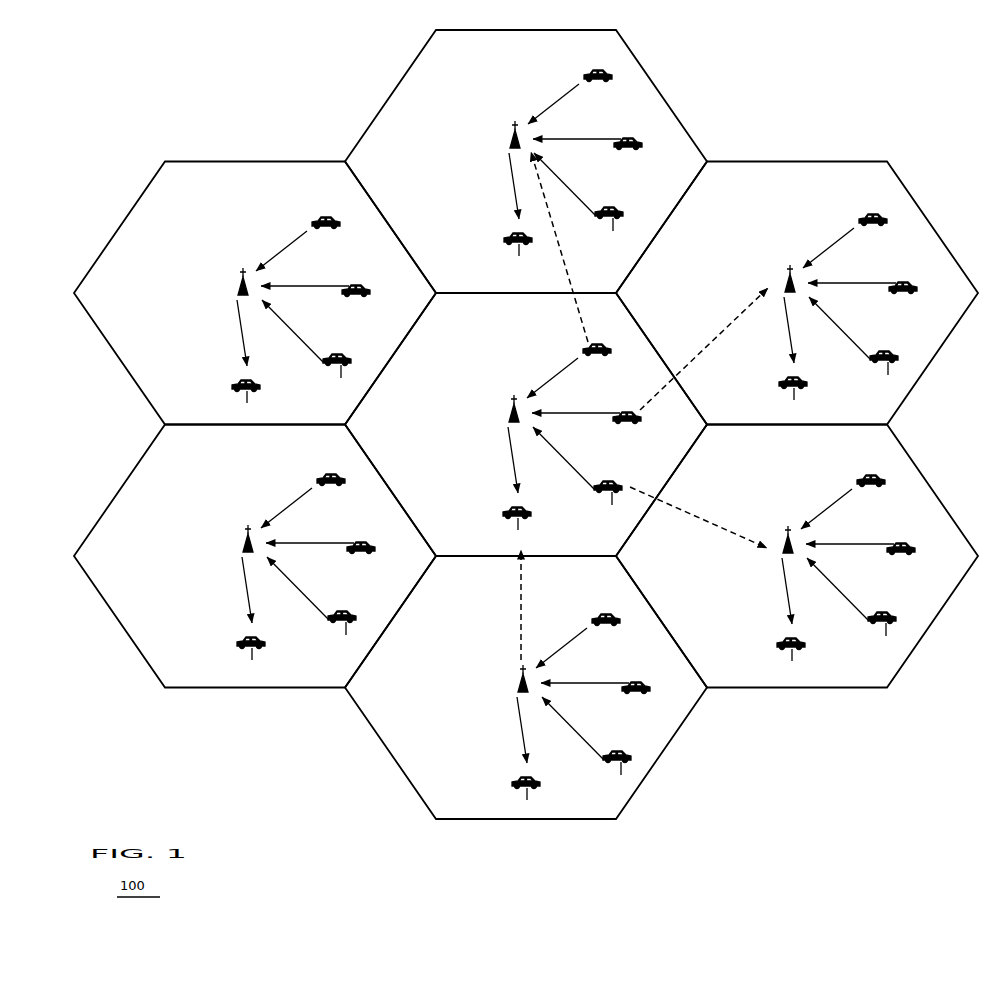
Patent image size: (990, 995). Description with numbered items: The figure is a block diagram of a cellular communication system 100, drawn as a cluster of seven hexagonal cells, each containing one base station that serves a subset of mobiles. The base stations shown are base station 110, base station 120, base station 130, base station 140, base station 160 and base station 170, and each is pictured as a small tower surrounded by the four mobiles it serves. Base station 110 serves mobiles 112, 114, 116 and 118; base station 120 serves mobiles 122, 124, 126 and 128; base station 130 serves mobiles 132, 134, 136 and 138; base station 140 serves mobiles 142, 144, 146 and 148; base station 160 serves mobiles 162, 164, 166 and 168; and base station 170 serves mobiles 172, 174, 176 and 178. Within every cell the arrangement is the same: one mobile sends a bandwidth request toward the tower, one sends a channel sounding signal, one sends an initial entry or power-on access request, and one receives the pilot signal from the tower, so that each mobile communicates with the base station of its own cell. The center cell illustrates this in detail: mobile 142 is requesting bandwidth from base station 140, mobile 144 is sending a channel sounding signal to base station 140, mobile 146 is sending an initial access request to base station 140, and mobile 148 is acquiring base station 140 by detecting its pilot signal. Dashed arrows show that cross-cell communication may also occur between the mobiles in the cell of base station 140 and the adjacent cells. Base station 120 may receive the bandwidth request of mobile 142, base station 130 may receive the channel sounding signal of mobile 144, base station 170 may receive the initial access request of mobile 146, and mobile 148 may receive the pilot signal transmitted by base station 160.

The cellular communication system 100 is at (526, 424).
The base station 110 is at (219, 279).
The mobile 112 is at (325, 206).
The mobile 114 is at (365, 309).
The mobile 116 is at (334, 372).
The mobile 118 is at (241, 399).
The base station 120 is at (491, 132).
The mobile 122 is at (597, 59).
The mobile 124 is at (637, 162).
The mobile 126 is at (606, 225).
The mobile 128 is at (513, 252).
The base station 130 is at (766, 276).
The mobile 132 is at (872, 203).
The mobile 134 is at (912, 306).
The mobile 136 is at (881, 369).
The mobile 138 is at (788, 396).
The base station 140 is at (490, 406).
The mobile 142 is at (596, 333).
The mobile 144 is at (636, 436).
The mobile 146 is at (605, 499).
The mobile 148 is at (512, 526).
The base station 160 is at (499, 676).
The mobile 162 is at (605, 603).
The mobile 164 is at (645, 706).
The mobile 166 is at (614, 769).
The mobile 168 is at (521, 796).
The base station 170 is at (494, 537).
The mobile 172 is at (600, 464).
The mobile 174 is at (640, 567).
The mobile 176 is at (609, 630).
The mobile 178 is at (516, 657).